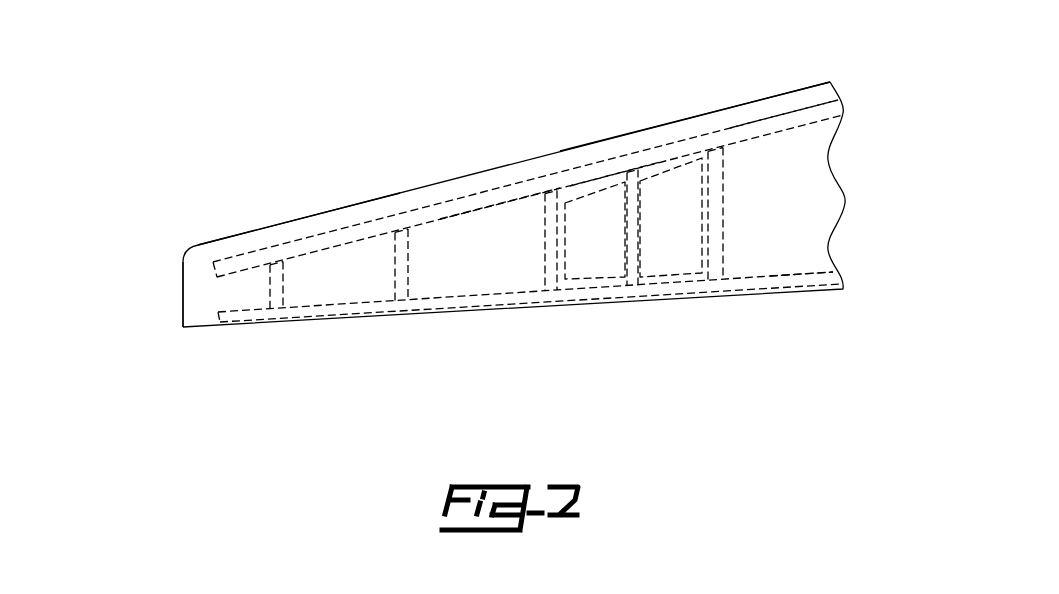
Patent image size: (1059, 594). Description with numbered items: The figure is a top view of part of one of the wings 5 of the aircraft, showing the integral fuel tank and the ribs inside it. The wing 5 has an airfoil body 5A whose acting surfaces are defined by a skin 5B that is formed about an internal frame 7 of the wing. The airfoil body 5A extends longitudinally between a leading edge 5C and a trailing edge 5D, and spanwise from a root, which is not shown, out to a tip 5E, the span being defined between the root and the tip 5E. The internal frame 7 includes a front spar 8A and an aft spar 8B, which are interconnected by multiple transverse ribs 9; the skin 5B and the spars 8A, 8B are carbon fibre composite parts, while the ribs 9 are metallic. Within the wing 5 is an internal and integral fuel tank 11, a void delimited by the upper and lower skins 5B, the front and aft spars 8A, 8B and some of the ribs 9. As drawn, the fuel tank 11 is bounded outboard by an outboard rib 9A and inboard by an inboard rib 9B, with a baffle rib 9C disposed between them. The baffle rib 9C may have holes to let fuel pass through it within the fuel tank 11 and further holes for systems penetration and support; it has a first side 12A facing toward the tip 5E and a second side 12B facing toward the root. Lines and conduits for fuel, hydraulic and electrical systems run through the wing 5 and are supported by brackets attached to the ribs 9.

The wing 5 is at (353, 165).
The airfoil body 5A is at (663, 125).
The skin 5B is at (298, 236).
The leading edge 5C is at (515, 162).
The trailing edge 5D is at (763, 293).
The tip 5E is at (183, 298).
The internal frame 7 is at (481, 221).
The front spar 8A is at (737, 145).
The aft spar 8B is at (790, 278).
The transverse ribs 9 is at (283, 282).
The outboard rib 9A is at (557, 205).
The inboard rib 9B is at (723, 255).
The baffle rib 9C is at (662, 270).
The fuel tank 11 is at (610, 181).
The first side 12A is at (625, 249).
The second side 12B is at (662, 270).